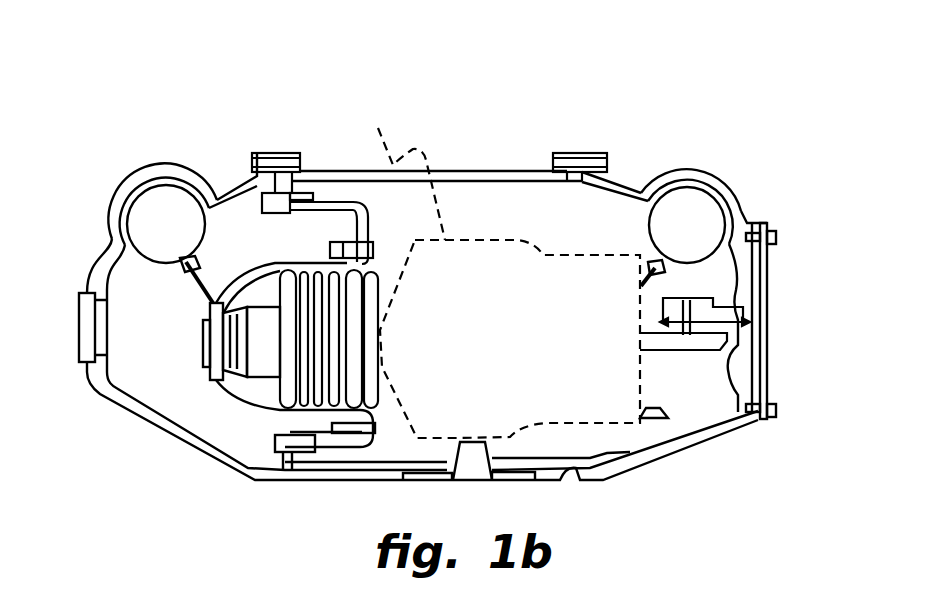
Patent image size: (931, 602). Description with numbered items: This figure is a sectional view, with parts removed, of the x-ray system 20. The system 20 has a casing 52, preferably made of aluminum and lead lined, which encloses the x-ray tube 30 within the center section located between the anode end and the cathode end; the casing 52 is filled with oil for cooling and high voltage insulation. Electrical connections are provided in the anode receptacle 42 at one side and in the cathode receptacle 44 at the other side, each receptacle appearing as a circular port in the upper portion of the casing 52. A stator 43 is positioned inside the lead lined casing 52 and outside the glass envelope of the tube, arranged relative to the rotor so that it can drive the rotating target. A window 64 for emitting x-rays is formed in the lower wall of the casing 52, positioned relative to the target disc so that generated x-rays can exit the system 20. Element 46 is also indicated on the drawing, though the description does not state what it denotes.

The x-ray system 20 is at (520, 137).
The x-ray tube 30 is at (504, 270).
The anode receptacle 42 is at (163, 212).
The stator 43 is at (327, 368).
The cathode receptacle 44 is at (687, 208).
The end plate 46 is at (216, 380).
The casing 52 is at (680, 447).
The window 64 is at (470, 478).